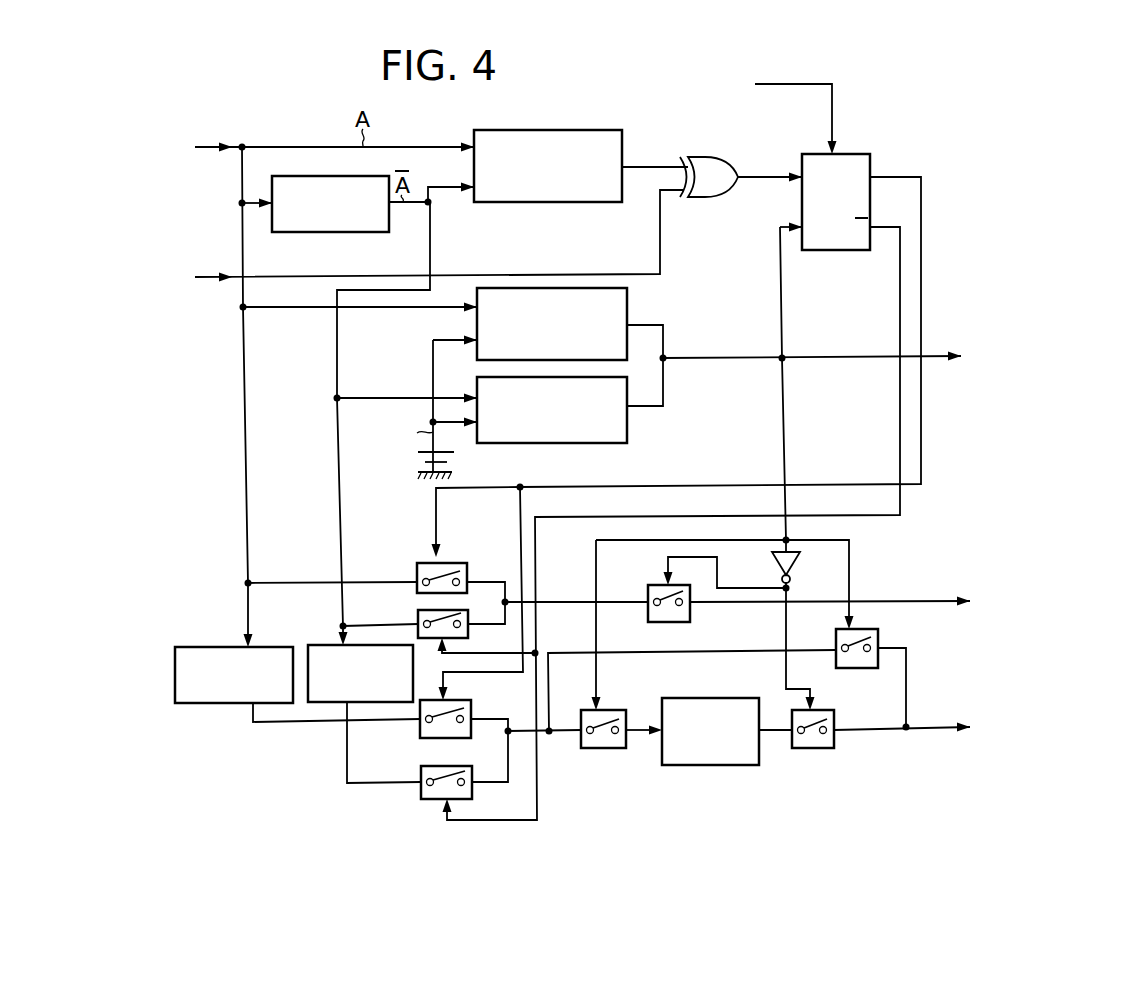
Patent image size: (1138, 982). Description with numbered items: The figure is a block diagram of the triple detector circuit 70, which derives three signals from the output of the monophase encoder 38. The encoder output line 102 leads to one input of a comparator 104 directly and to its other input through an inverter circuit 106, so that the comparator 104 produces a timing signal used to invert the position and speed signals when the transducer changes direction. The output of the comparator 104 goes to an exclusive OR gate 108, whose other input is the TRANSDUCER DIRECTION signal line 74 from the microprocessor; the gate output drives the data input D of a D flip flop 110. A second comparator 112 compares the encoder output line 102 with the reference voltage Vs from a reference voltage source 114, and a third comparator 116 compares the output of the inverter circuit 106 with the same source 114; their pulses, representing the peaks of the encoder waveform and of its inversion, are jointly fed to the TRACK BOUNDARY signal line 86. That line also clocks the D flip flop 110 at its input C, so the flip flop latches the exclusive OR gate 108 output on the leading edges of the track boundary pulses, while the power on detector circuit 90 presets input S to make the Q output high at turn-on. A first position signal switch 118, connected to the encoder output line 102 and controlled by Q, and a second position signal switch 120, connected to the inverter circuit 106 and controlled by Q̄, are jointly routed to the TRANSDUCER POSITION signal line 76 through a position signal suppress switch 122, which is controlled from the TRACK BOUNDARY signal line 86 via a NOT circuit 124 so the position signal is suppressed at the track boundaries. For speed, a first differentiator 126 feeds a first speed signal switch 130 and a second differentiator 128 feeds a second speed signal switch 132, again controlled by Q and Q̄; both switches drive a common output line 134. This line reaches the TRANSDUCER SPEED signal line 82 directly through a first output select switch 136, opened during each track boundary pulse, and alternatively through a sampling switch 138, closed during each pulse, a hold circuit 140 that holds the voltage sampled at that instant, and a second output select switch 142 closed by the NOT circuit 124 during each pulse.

The monophase encoder 38 is at (110, 144).
The triple detector circuit 70 is at (191, 484).
The TRANSDUCER DIRECTION signal line 74 is at (231, 276).
The TRANSDUCER POSITION signal line 76 is at (921, 599).
The TRANSDUCER SPEED signal line 82 is at (925, 726).
The TRACK BOUNDARY signal line 86 is at (934, 359).
The power on detector circuit 90 is at (880, 104).
The encoder output line 102 is at (232, 147).
The comparator 104 is at (622, 132).
The inverter circuit 106 is at (327, 233).
The exclusive OR gate 108 is at (712, 155).
The D flip flop 110 is at (857, 153).
The second comparator 112 is at (630, 312).
The reference voltage source 114 is at (418, 455).
The third comparator 116 is at (630, 440).
The first position signal switch 118 is at (417, 562).
The second position signal switch 120 is at (418, 624).
The position signal suppress switch 122 is at (694, 621).
The NOT circuit 124 is at (793, 565).
The first differentiator 126 is at (223, 647).
The second differentiator 128 is at (316, 645).
The first speed signal switch 130 is at (476, 688).
The second speed signal switch 132 is at (420, 771).
The common output line 134 is at (558, 729).
The first output select switch 136 is at (878, 633).
The sampling switch 138 is at (626, 697).
The hold circuit 140 is at (701, 698).
The second output select switch 142 is at (832, 710).